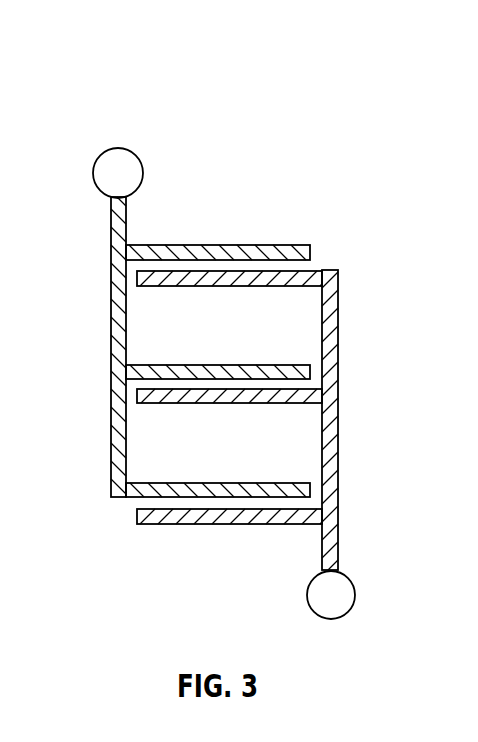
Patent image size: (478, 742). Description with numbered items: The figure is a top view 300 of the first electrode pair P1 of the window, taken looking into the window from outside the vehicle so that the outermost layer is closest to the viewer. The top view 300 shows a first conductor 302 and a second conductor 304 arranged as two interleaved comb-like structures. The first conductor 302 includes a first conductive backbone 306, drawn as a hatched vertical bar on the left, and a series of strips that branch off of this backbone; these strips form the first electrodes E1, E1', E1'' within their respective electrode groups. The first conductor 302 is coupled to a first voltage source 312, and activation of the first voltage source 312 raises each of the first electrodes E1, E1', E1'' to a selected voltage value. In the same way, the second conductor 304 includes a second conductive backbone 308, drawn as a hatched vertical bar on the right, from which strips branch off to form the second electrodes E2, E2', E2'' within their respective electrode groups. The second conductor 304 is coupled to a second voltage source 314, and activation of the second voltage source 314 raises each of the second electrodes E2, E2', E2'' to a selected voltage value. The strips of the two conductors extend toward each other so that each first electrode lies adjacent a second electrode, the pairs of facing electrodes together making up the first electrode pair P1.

The top view 300 is at (357, 137).
The first conductor 302 is at (108, 398).
The second conductor 304 is at (343, 495).
The first conductive backbone 306 is at (110, 308).
The second conductive backbone 308 is at (330, 408).
The first voltage source 312 is at (102, 157).
The second voltage source 314 is at (345, 613).
The first electrode pair P1 is at (250, 117).
The first electrode E1 is at (218, 221).
The first electrode E1' is at (218, 354).
The first electrode E1'' is at (218, 472).
The second electrode E2 is at (247, 240).
The second electrode E2' is at (229, 416).
The second electrode E2'' is at (229, 536).